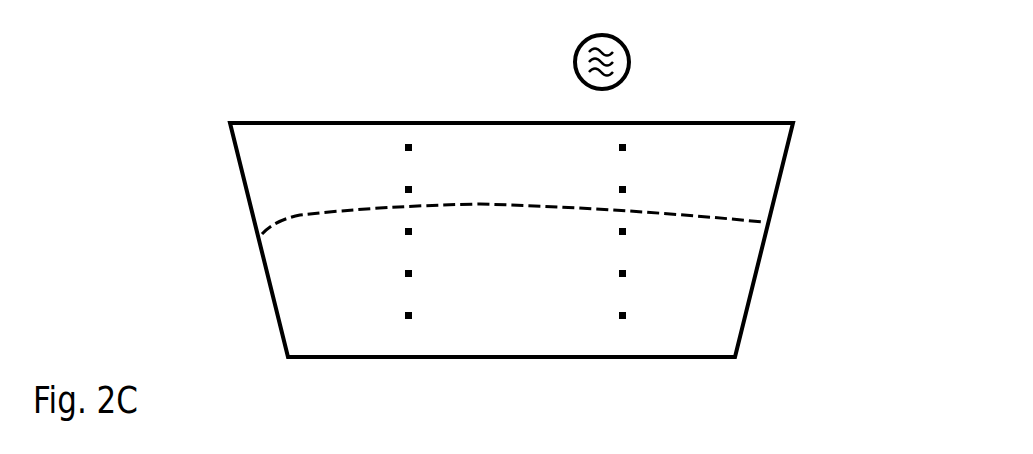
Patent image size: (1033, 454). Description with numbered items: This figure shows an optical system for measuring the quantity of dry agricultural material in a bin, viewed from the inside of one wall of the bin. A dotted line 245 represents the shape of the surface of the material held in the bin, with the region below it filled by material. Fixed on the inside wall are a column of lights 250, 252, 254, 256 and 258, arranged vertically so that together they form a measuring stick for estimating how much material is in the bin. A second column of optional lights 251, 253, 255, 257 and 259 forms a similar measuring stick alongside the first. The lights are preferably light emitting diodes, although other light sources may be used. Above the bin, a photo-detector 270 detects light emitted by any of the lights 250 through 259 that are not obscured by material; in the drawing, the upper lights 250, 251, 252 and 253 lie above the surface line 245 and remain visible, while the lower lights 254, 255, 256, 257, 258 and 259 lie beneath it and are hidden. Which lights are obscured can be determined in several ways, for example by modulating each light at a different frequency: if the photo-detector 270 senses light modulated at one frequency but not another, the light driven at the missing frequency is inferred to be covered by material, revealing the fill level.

The dotted line 245 is at (740, 215).
The photo-detector 270 is at (627, 42).
The light 250 is at (404, 147).
The optional light 251 is at (618, 147).
The light 252 is at (404, 189).
The optional light 253 is at (618, 189).
The light 254 is at (404, 231).
The optional light 255 is at (618, 231).
The light 256 is at (404, 273).
The optional light 257 is at (618, 273).
The light 258 is at (404, 315).
The optional light 259 is at (618, 315).